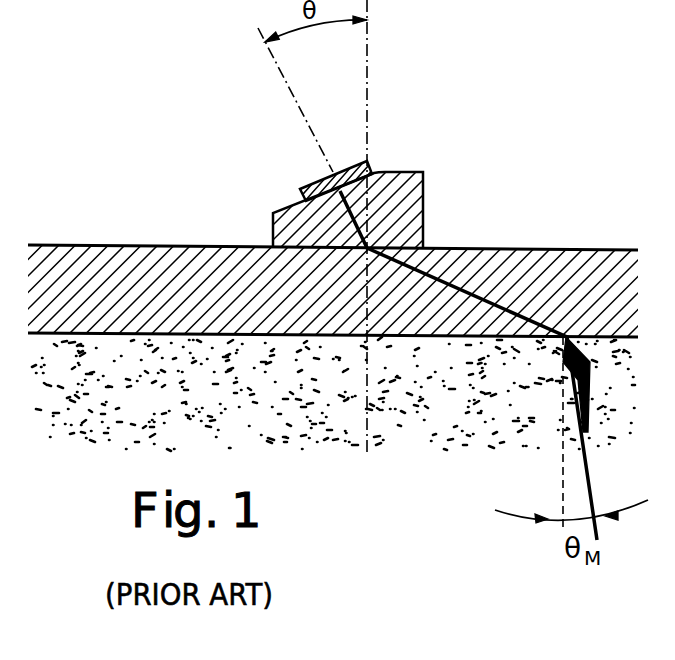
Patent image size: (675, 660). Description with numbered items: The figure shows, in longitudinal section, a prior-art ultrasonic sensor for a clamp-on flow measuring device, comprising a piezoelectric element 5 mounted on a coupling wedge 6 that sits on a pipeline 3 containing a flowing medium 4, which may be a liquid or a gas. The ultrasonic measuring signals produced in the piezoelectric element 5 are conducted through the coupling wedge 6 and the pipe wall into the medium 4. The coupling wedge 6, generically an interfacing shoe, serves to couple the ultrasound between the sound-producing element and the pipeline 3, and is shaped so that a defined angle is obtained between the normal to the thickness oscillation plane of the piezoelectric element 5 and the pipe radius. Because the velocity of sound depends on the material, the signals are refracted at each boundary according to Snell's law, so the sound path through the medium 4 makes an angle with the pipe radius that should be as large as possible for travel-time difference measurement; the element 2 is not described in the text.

The wedge 2 is at (410, 183).
The pipeline 3 is at (524, 270).
The medium 4 is at (432, 400).
The piezoelectric element 5 is at (305, 188).
The coupling wedge 6 is at (405, 213).